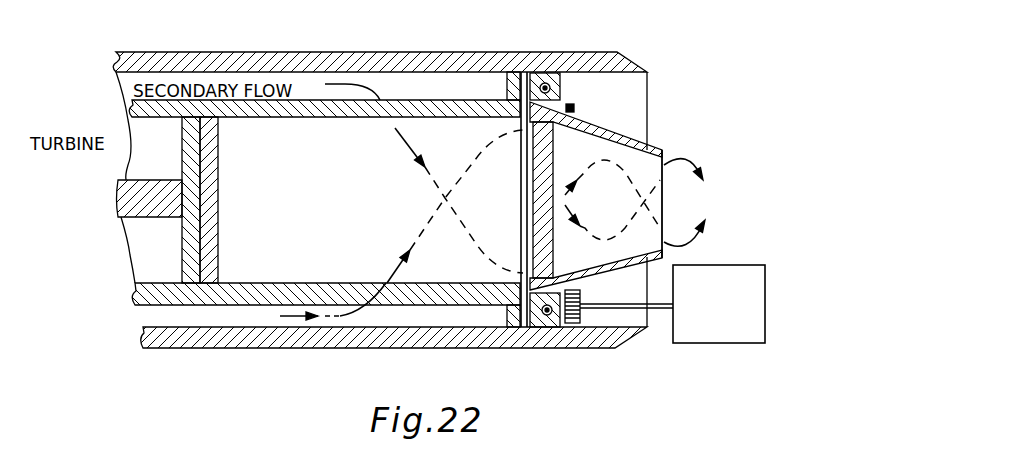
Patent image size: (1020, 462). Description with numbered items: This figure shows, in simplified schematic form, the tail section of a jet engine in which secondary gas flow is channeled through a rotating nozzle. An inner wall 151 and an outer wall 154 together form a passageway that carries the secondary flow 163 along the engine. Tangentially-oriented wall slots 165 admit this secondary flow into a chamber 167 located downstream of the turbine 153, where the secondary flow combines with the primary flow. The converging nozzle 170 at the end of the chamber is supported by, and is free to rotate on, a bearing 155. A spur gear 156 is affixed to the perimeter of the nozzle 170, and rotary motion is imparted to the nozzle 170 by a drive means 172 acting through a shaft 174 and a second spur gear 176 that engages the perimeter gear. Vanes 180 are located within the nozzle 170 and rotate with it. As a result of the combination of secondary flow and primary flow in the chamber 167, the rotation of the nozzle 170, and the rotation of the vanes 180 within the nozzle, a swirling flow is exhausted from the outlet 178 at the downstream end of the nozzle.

The inner wall 151 is at (168, 292).
The turbine 153 is at (218, 222).
The outer wall 154 is at (175, 346).
The bearing 155 is at (543, 74).
The spur gear 156 is at (573, 106).
The secondary flow 163 is at (438, 188).
The tangentially-oriented wall slots 165 is at (390, 122).
The chamber 167 is at (308, 168).
The converging nozzle 170 is at (647, 138).
The drive means 172 is at (725, 266).
The shaft 174 is at (605, 299).
The spur gear 176 is at (572, 326).
The outlet 178 is at (666, 205).
The vanes 180 is at (543, 200).